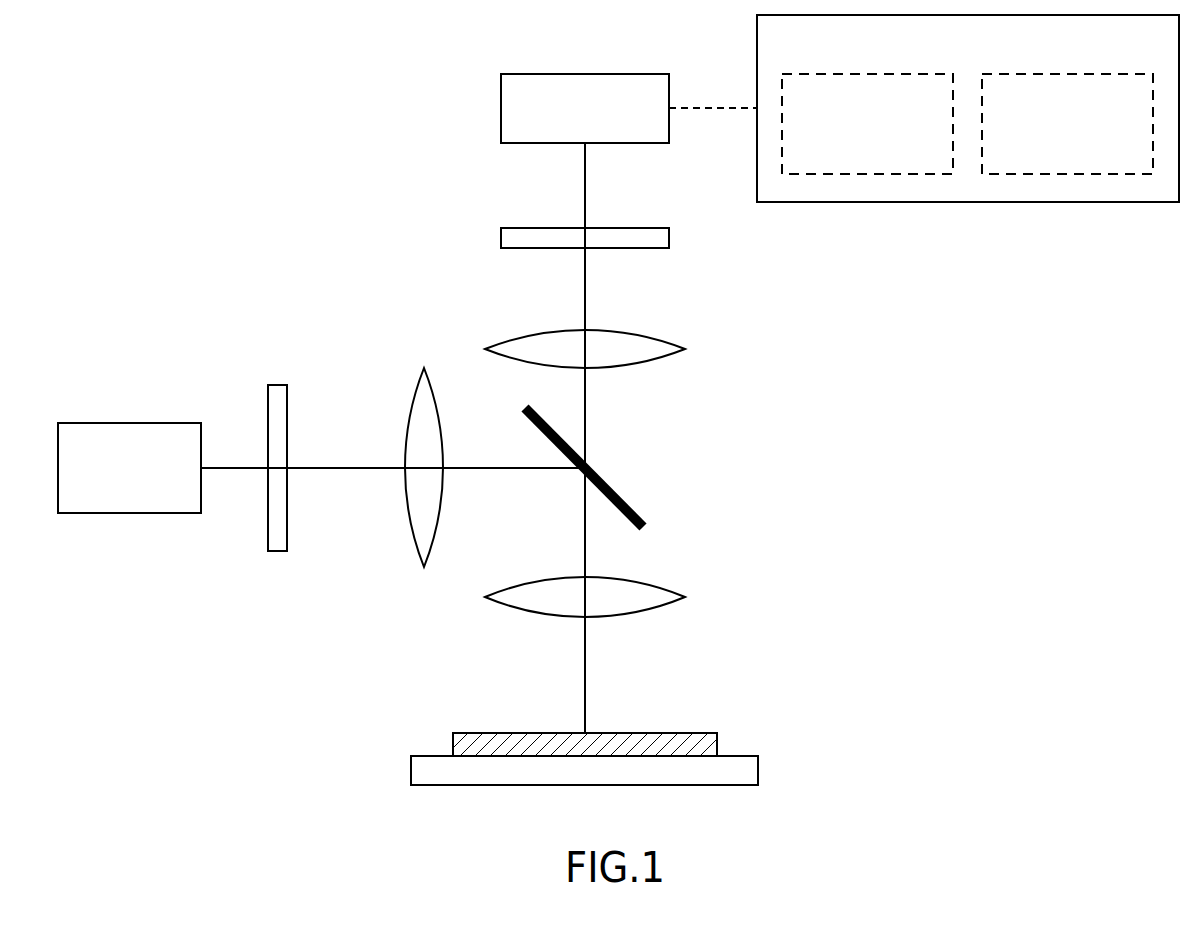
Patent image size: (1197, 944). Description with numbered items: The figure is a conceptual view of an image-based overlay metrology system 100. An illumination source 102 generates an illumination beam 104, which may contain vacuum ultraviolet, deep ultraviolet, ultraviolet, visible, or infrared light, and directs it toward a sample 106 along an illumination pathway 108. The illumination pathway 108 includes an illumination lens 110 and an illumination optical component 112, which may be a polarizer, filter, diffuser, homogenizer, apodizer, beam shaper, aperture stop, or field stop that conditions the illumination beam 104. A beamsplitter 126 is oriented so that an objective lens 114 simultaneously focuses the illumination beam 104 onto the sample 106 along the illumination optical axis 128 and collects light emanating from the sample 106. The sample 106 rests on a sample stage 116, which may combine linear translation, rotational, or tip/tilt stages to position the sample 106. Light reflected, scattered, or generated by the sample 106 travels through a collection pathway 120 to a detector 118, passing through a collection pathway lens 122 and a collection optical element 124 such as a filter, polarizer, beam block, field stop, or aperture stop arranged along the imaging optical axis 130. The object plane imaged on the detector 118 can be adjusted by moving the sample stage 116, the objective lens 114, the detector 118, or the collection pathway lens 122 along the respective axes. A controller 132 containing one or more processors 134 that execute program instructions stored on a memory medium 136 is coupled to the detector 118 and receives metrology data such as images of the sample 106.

The overlay metrology system 100 is at (218, 250).
The illumination source 102 is at (129, 468).
The illumination beam 104 is at (237, 466).
The sample 106 is at (717, 742).
The illumination pathway 108 is at (396, 361).
The illumination lens 110 is at (418, 560).
The illumination optical component 112 is at (279, 553).
The objective lens 114 is at (665, 585).
The sample stage 116 is at (758, 770).
The detector 118 is at (585, 108).
The collection pathway 120 is at (713, 409).
The collection pathway lens 122 is at (662, 338).
The collection optical element 124 is at (500, 236).
The beamsplitter 126 is at (630, 500).
The illumination optical axis 128 is at (585, 683).
The imaging optical axis 130 is at (585, 298).
The controller 132 is at (924, 108).
The processor 134 is at (867, 124).
The memory medium 136 is at (1067, 124).